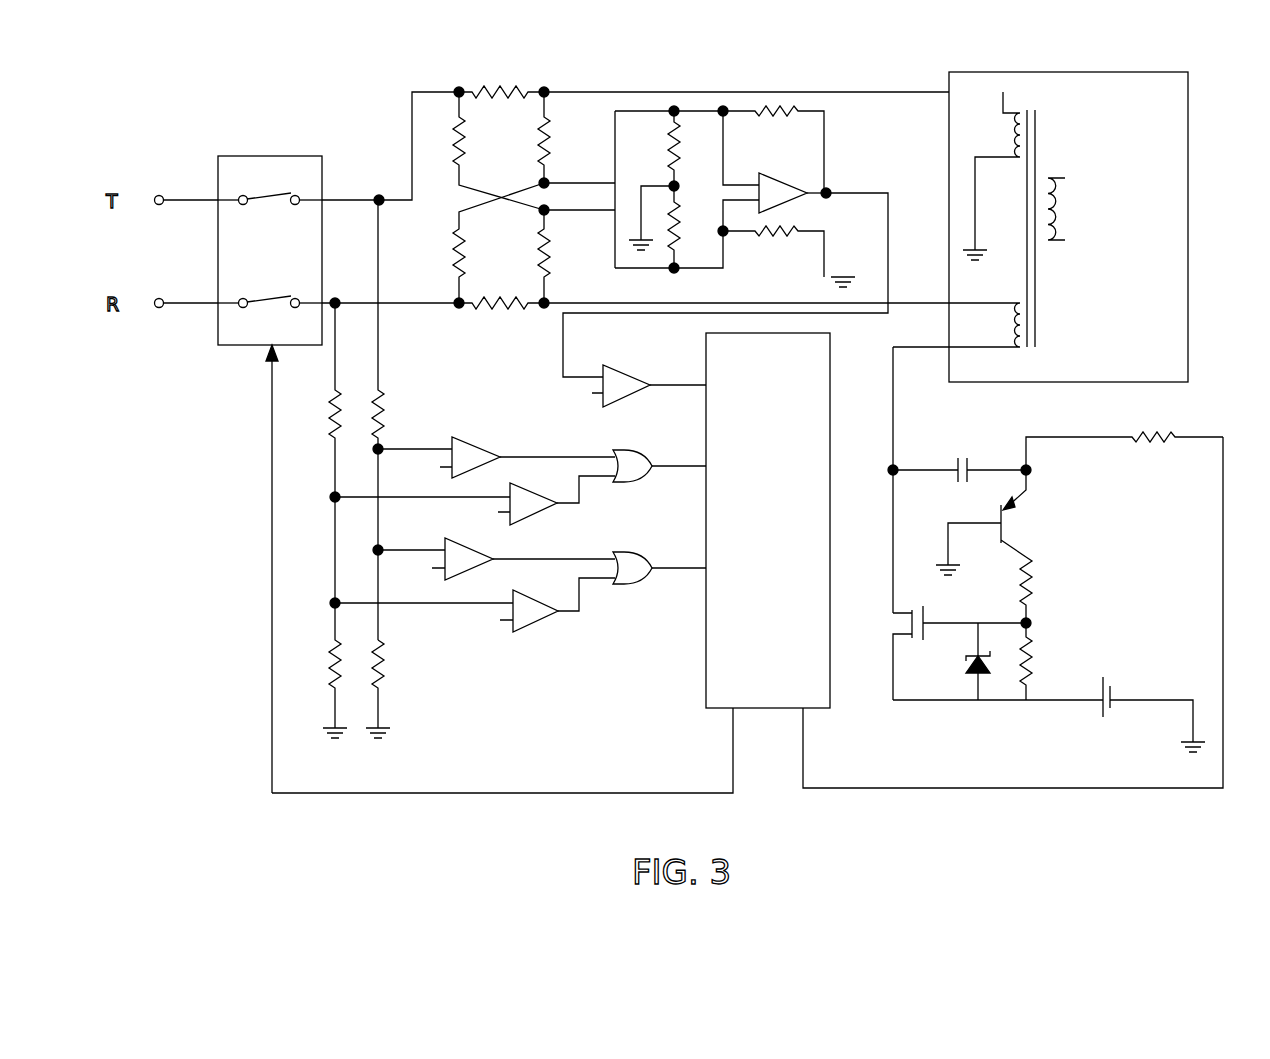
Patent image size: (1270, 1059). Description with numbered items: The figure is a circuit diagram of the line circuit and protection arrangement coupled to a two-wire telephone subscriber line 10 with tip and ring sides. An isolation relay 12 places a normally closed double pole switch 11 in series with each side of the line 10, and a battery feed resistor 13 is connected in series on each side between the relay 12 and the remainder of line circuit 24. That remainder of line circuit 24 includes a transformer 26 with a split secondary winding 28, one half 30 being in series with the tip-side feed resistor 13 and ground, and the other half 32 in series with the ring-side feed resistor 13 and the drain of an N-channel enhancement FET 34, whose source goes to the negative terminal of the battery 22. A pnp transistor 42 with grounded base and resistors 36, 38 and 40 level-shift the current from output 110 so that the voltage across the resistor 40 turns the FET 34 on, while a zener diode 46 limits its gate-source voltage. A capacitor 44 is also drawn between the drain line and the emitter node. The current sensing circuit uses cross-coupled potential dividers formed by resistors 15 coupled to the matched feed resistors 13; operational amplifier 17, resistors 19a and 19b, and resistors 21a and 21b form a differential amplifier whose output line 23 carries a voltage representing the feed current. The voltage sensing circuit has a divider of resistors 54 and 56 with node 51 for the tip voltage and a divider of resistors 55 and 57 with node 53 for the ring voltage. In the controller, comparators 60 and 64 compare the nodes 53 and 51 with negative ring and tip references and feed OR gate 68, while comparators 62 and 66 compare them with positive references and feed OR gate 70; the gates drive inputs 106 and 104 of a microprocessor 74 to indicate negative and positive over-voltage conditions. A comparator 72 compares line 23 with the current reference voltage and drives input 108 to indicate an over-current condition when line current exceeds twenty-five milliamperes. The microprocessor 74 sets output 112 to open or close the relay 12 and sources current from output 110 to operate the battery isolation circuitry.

The two-wire telephone subscriber line 10 is at (122, 268).
The double pole switch 11 is at (270, 193).
The isolation relay 12 is at (276, 156).
The battery feed resistor 13 is at (527, 90).
The resistors 15 is at (537, 160).
The operational amplifier 17 is at (768, 165).
The resistor 19a is at (668, 160).
The resistor 19b is at (680, 216).
The resistor 21a is at (774, 106).
The resistor 21b is at (766, 240).
The battery 22 is at (1120, 691).
The output line 23 is at (857, 192).
The remainder of line circuit 24 is at (1193, 283).
The transformer 26 is at (1029, 217).
The split secondary winding 28 is at (1026, 209).
The winding half 30 is at (1010, 151).
The winding half 32 is at (1014, 326).
The N-channel enhancement FET 34 is at (893, 621).
The resistor 36 is at (1170, 426).
The resistor 38 is at (1046, 583).
The resistor 40 is at (1046, 644).
The pnp transistor 42 is at (1023, 524).
The capacitor 44 is at (957, 458).
The zener diode 46 is at (968, 680).
The node 51 is at (372, 485).
The node 53 is at (332, 559).
The resistor 54 is at (400, 679).
The resistor 55 is at (320, 684).
The resistor 56 is at (400, 394).
The resistor 57 is at (321, 431).
The comparator 60 is at (540, 523).
The comparator 62 is at (545, 631).
The comparator 64 is at (479, 437).
The comparator 66 is at (438, 543).
The OR gate 68 is at (633, 481).
The OR gate 70 is at (636, 583).
The comparator 72 is at (628, 401).
The microprocessor 74 is at (706, 623).
The input 104 is at (731, 568).
The input 106 is at (731, 466).
The input 108 is at (731, 385).
The output 110 is at (1003, 612).
The output 112 is at (510, 739).